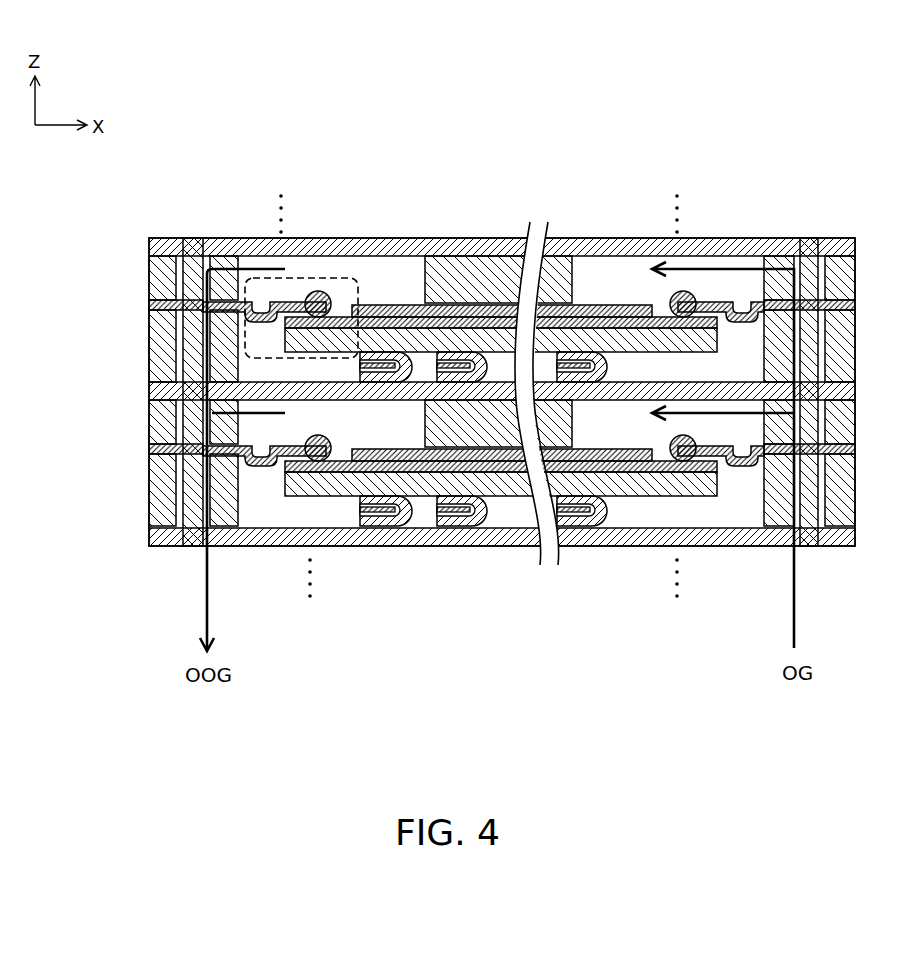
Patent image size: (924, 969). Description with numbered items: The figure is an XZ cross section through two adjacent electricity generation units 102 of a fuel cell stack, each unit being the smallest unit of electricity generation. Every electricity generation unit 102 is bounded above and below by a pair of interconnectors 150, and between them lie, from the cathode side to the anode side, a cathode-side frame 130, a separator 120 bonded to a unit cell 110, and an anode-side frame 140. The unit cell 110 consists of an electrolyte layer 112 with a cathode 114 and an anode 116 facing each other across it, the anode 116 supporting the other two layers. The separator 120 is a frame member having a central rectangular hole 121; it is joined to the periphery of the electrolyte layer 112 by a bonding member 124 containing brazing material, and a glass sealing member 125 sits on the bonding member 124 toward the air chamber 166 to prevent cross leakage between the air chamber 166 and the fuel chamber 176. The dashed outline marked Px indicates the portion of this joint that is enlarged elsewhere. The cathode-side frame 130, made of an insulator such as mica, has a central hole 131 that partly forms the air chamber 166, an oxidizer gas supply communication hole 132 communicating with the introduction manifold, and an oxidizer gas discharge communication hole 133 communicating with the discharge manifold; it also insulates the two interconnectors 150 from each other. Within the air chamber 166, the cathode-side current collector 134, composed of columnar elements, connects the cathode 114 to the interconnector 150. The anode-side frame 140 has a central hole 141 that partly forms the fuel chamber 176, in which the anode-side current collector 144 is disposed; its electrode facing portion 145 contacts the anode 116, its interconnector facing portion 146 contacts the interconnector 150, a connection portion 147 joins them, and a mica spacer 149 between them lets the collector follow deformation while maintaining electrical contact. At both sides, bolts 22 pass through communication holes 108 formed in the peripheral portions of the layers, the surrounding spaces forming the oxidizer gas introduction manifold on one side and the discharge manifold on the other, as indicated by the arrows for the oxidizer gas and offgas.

The bolt 22 is at (190, 238).
The electricity generation unit 102 is at (78, 247).
The communication hole 108 is at (178, 547).
The unit cell 110 is at (483, 147).
The electrolyte layer 112 is at (396, 238).
The cathode 114 is at (424, 238).
The anode 116 is at (376, 238).
The separator 120 is at (148, 306).
The hole 121 is at (335, 452).
The bonding member 124 is at (286, 463).
The glass sealing member 125 is at (308, 238).
The cathode-side frame 130 is at (148, 281).
The hole 131 is at (246, 441).
The oxidizer gas supply communication hole 132 is at (778, 238).
The oxidizer gas discharge communication hole 133 is at (216, 238).
The cathode-side current collector 134 is at (467, 238).
The anode-side frame 140 is at (148, 358).
The hole 141 is at (240, 512).
The anode-side current collector 144 is at (522, 645).
The electrode facing portion 145 is at (421, 546).
The interconnector facing portion 146 is at (452, 546).
The connection portion 147 is at (487, 546).
The spacer 149 is at (375, 546).
The interconnector 150 is at (148, 250).
The air chamber 166 is at (618, 435).
The fuel chamber 176 is at (675, 521).
The portion Px is at (267, 238).